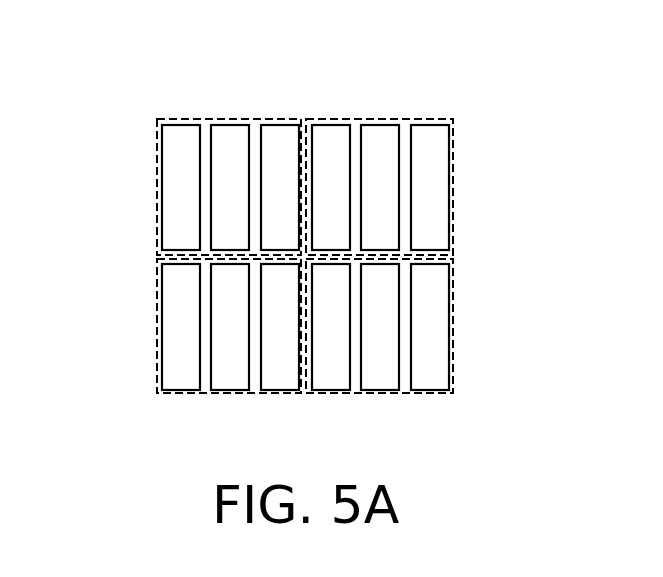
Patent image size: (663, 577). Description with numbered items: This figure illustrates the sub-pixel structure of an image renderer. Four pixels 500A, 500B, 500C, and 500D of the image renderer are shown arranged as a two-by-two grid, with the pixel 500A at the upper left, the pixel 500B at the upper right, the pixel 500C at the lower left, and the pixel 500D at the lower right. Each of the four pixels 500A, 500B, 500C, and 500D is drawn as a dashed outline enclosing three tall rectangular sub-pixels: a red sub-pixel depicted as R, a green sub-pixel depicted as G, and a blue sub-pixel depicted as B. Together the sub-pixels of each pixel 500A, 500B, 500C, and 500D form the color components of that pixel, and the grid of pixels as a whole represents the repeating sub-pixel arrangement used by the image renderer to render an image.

The pixel 500A is at (175, 158).
The pixel 500B is at (430, 158).
The pixel 500C is at (179, 356).
The pixel 500D is at (431, 356).